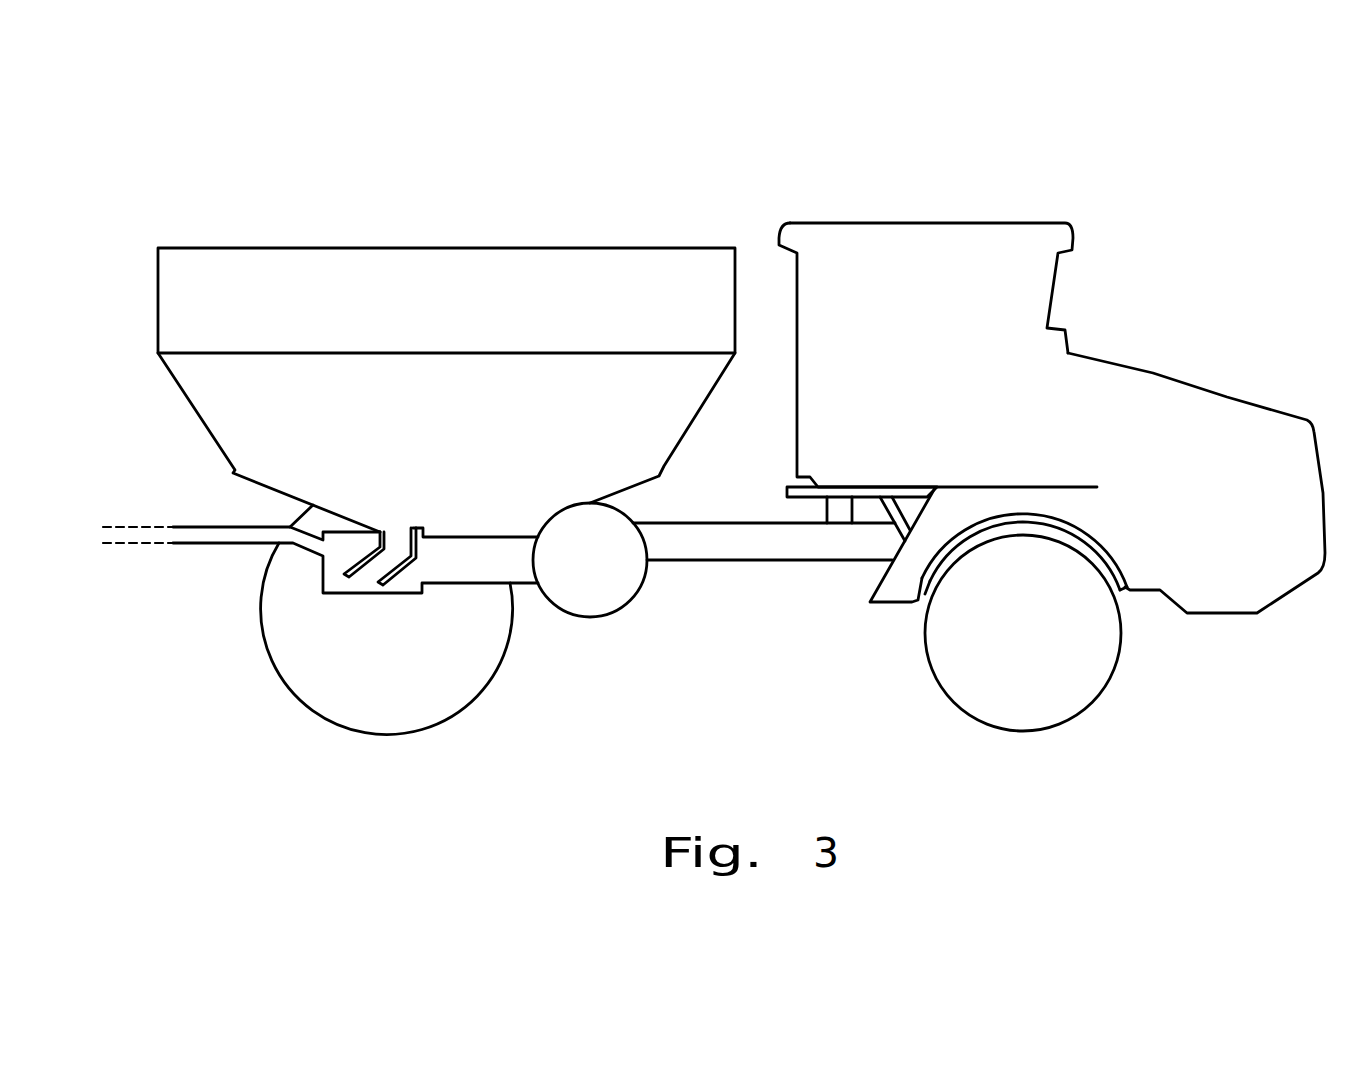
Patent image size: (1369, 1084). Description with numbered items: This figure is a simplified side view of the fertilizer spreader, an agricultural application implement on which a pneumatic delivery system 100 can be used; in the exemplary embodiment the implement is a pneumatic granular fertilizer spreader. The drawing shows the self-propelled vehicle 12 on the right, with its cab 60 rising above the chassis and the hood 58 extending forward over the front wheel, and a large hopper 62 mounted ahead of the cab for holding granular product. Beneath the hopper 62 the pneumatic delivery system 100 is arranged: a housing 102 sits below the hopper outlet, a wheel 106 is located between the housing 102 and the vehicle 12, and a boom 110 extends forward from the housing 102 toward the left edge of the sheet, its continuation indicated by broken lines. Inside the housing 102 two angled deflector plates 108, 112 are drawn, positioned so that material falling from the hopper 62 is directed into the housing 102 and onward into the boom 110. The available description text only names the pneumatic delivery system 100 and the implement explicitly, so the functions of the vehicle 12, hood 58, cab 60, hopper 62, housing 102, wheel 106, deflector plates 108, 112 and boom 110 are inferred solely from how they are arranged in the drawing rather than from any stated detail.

The vehicle 12 is at (1052, 411).
The hood 58 is at (1213, 428).
The cab 60 is at (1027, 278).
The hopper 62 is at (180, 283).
The pneumatic delivery system 100 is at (408, 579).
The housing 102 is at (346, 554).
The wheel 106 is at (603, 588).
The deflector plate 108 is at (387, 567).
The conveyor boom 110 is at (192, 540).
The deflector plate 112 is at (413, 527).